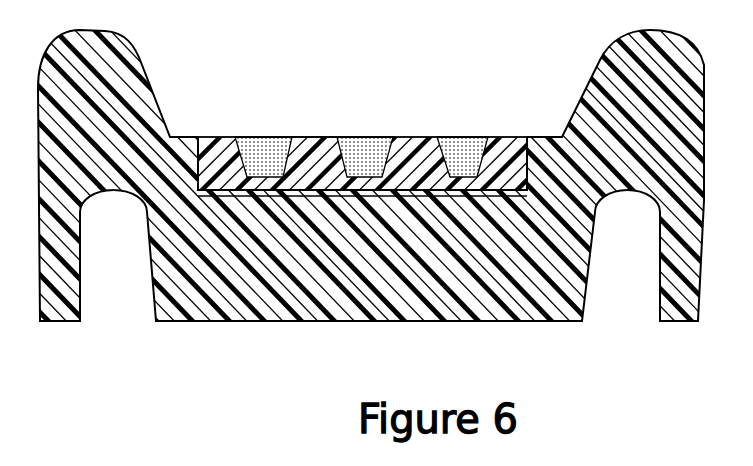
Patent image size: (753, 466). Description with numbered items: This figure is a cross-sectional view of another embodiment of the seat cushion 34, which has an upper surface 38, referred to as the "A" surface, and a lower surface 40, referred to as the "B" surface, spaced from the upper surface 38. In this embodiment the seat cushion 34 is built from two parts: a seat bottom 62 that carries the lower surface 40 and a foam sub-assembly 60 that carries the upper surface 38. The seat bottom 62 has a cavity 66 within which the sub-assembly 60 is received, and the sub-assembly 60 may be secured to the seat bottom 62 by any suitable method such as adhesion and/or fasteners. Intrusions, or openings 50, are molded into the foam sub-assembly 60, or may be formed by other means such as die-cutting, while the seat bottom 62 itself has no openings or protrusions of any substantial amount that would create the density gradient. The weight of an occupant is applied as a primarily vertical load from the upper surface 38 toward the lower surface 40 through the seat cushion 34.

The seat cushion 34 is at (426, 106).
The upper surface 38 is at (317, 137).
The lower surface 40 is at (217, 322).
The intrusions (openings) 50 is at (264, 150).
The foam sub-assembly 60 is at (221, 137).
The seat bottom 62 is at (488, 193).
The cavity 66 is at (198, 167).